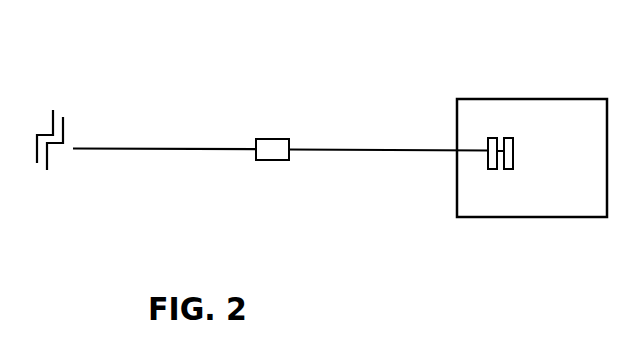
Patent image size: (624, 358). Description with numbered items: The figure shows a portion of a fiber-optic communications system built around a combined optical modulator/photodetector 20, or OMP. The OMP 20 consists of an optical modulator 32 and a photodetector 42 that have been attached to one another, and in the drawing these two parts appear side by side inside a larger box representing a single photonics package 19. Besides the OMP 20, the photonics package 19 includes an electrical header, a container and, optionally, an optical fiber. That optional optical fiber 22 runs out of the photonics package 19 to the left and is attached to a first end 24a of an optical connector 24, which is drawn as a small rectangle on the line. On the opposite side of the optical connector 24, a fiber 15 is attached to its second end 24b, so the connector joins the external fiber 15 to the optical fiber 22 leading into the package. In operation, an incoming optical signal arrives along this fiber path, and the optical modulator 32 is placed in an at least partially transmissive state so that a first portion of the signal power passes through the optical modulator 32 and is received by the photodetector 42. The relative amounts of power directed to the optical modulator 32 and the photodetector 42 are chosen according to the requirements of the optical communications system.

The fiber 15 is at (153, 142).
The photonics package 19 is at (489, 96).
The combined optical modulator/photodetector 20 is at (515, 122).
The optical fiber 22 is at (358, 155).
The optical connector 24 is at (270, 165).
The first end 24a is at (288, 137).
The second end 24b is at (257, 137).
The optical modulator 32 is at (497, 172).
The photodetector 42 is at (506, 172).